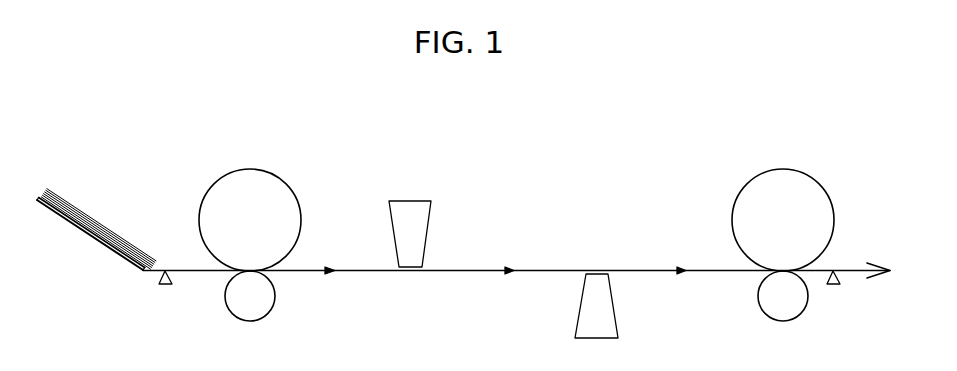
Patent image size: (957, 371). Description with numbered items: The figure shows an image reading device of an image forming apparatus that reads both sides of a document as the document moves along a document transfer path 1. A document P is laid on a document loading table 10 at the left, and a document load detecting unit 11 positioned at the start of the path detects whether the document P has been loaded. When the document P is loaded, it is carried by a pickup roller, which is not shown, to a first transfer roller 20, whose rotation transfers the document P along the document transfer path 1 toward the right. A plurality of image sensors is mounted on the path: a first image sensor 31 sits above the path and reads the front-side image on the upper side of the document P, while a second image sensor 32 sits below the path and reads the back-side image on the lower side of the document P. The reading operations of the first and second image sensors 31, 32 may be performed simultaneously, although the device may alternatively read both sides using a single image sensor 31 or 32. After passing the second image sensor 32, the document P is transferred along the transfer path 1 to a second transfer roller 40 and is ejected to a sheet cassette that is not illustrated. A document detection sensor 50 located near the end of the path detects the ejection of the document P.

The document transfer path 1 is at (555, 269).
The document loading table 10 is at (90, 237).
The document P is at (90, 212).
The document load detecting unit 11 is at (160, 275).
The first transfer roller 20 is at (275, 173).
The first image sensor 31 is at (410, 200).
The second image sensor 32 is at (610, 308).
The second transfer roller 40 is at (807, 173).
The document detection sensor 50 is at (840, 278).